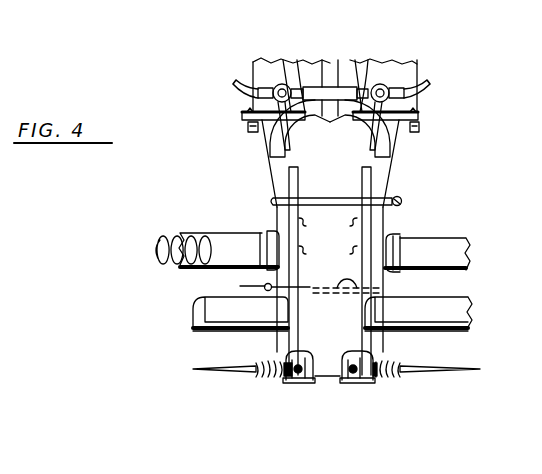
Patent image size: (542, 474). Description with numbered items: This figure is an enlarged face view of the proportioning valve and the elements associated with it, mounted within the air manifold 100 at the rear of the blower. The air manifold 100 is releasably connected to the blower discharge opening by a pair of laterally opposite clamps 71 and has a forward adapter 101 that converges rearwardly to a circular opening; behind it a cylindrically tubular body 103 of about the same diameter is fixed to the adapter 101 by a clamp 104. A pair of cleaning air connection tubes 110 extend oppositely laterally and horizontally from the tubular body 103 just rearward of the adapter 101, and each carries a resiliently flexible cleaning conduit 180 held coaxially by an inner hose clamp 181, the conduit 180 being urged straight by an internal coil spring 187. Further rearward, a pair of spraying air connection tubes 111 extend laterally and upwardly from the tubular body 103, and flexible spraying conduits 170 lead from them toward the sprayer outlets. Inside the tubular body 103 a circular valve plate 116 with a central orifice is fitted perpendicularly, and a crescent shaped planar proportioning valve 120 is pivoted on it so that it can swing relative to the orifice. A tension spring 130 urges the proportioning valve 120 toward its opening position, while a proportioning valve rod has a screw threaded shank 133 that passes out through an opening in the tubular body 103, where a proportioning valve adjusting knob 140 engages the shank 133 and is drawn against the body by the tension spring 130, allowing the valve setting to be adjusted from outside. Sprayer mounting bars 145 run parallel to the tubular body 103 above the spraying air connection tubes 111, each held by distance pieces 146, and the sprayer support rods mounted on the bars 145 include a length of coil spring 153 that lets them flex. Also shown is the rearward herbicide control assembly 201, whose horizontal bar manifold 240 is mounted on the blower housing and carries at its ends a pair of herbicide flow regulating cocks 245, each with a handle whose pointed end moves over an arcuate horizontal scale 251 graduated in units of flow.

The bar manifold 240 is at (300, 110).
The arcuate horizontal scale 251 is at (297, 68).
The rearward herbicide control assembly 201 is at (350, 58).
The herbicide flow regulating cocks 245 is at (278, 84).
The clamps 71 is at (252, 132).
The forward adapter 101 is at (345, 169).
The clamp 104 is at (373, 199).
The cleaning air connection tubes 110 is at (275, 200).
The inner hose clamp 181 is at (270, 230).
The cleaning conduit 180 is at (324, 251).
The internal coil spring 187 is at (160, 240).
The distance pieces 146 is at (341, 422).
The sprayer mounting bars 145 is at (328, 267).
The proportioning valve adjusting knob 140 is at (258, 285).
The screw threaded shank 133 is at (240, 285).
The air manifold 100 is at (388, 283).
The proportioning valve 120 is at (385, 290).
The tubular body 103 is at (340, 333).
The spraying conduits 170 is at (332, 312).
The spraying air connection tubes 111 is at (270, 333).
The tension spring 130 is at (221, 369).
The coil spring 153 is at (270, 378).
The valve plate 116 is at (355, 297).